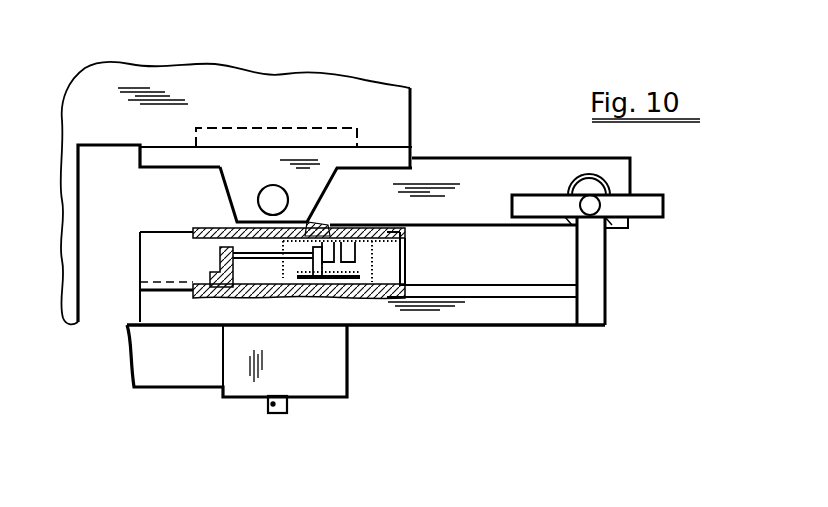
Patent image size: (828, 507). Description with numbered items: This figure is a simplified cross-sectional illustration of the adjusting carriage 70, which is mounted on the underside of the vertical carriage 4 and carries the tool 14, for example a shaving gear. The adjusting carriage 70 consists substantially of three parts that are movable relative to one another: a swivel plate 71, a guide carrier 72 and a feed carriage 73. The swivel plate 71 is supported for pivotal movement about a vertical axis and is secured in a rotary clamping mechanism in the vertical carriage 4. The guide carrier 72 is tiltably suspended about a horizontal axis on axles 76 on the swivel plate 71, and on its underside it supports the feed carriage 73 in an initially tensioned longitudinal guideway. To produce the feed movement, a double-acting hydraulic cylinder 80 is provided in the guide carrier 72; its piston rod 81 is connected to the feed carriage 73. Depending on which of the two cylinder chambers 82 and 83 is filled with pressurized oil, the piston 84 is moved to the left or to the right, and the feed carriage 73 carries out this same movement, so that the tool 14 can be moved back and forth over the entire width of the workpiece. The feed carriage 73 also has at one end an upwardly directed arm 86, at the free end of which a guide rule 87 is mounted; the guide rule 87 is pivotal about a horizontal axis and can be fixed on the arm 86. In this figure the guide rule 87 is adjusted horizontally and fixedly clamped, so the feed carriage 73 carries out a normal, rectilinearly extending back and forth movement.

The vertical carriage 4 is at (105, 93).
The tool 14 is at (276, 413).
The adjusting carriage 70 is at (666, 179).
The swivel plate 71 is at (243, 168).
The guide carrier 72 is at (150, 258).
The feed carriage 73 is at (180, 305).
The axle 76 is at (272, 200).
The double-acting hydraulic cylinder 80 is at (398, 286).
The piston rod 81 is at (234, 286).
The cylinder chamber 82 is at (347, 255).
The cylinder chamber 83 is at (316, 280).
The piston 84 is at (328, 253).
The arm 86 is at (585, 260).
The guide rule 87 is at (530, 207).